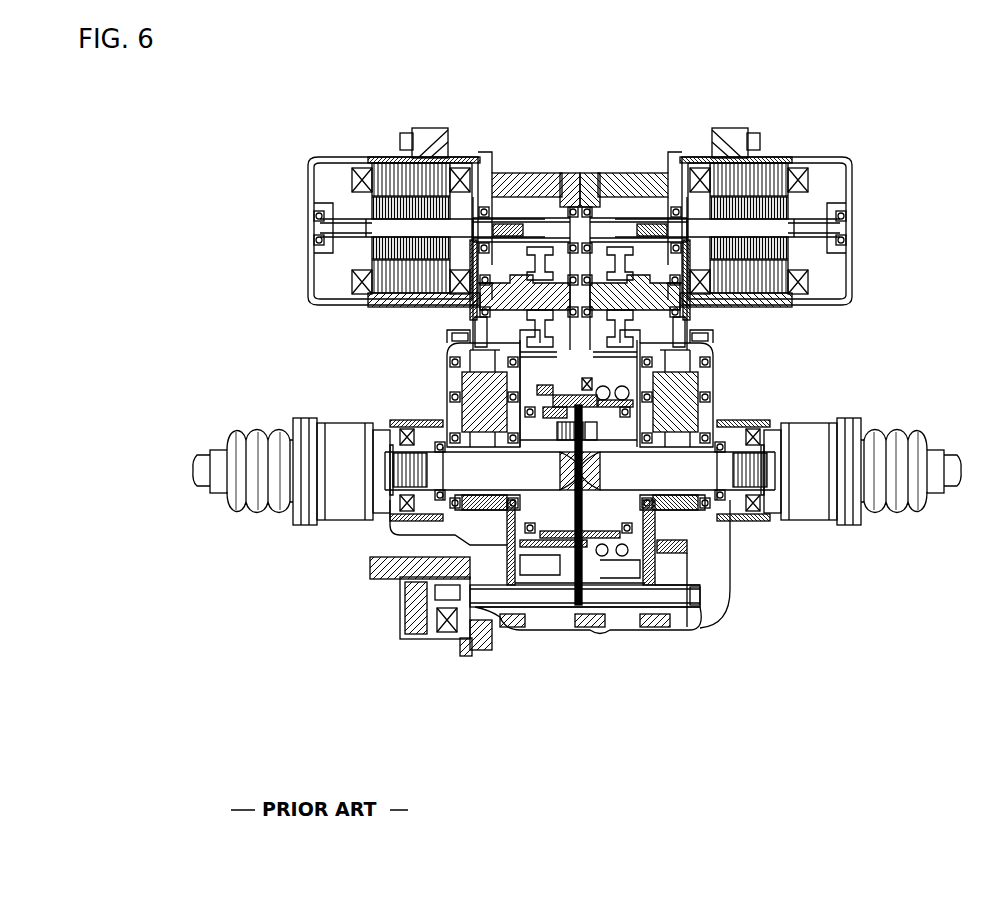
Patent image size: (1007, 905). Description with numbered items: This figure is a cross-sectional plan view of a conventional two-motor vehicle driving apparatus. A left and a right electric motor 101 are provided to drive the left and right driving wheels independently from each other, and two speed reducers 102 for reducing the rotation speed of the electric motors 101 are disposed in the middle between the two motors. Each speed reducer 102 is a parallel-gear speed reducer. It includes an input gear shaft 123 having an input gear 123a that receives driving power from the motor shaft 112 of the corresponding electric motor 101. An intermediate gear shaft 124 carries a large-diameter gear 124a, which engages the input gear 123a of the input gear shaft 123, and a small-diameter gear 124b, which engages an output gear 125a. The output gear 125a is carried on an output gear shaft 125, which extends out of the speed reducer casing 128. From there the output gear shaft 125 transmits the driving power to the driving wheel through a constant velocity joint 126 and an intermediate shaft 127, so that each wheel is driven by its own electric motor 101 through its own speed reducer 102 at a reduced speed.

The electric motor 101 is at (376, 146).
The motor shaft 112 is at (420, 205).
The input gear shaft 123 is at (525, 210).
The input gear 123a is at (540, 232).
The intermediate gear shaft 124 is at (445, 338).
The large-diameter gear 124a is at (470, 410).
The small-diameter gear 124b is at (533, 300).
The output gear shaft 125 is at (456, 466).
The output gear 125a is at (415, 622).
The speed reducer 102 is at (500, 548).
The speed reducer casing 128 is at (560, 617).
The constant velocity joint 126 is at (325, 522).
The intermediate shaft 127 is at (205, 483).